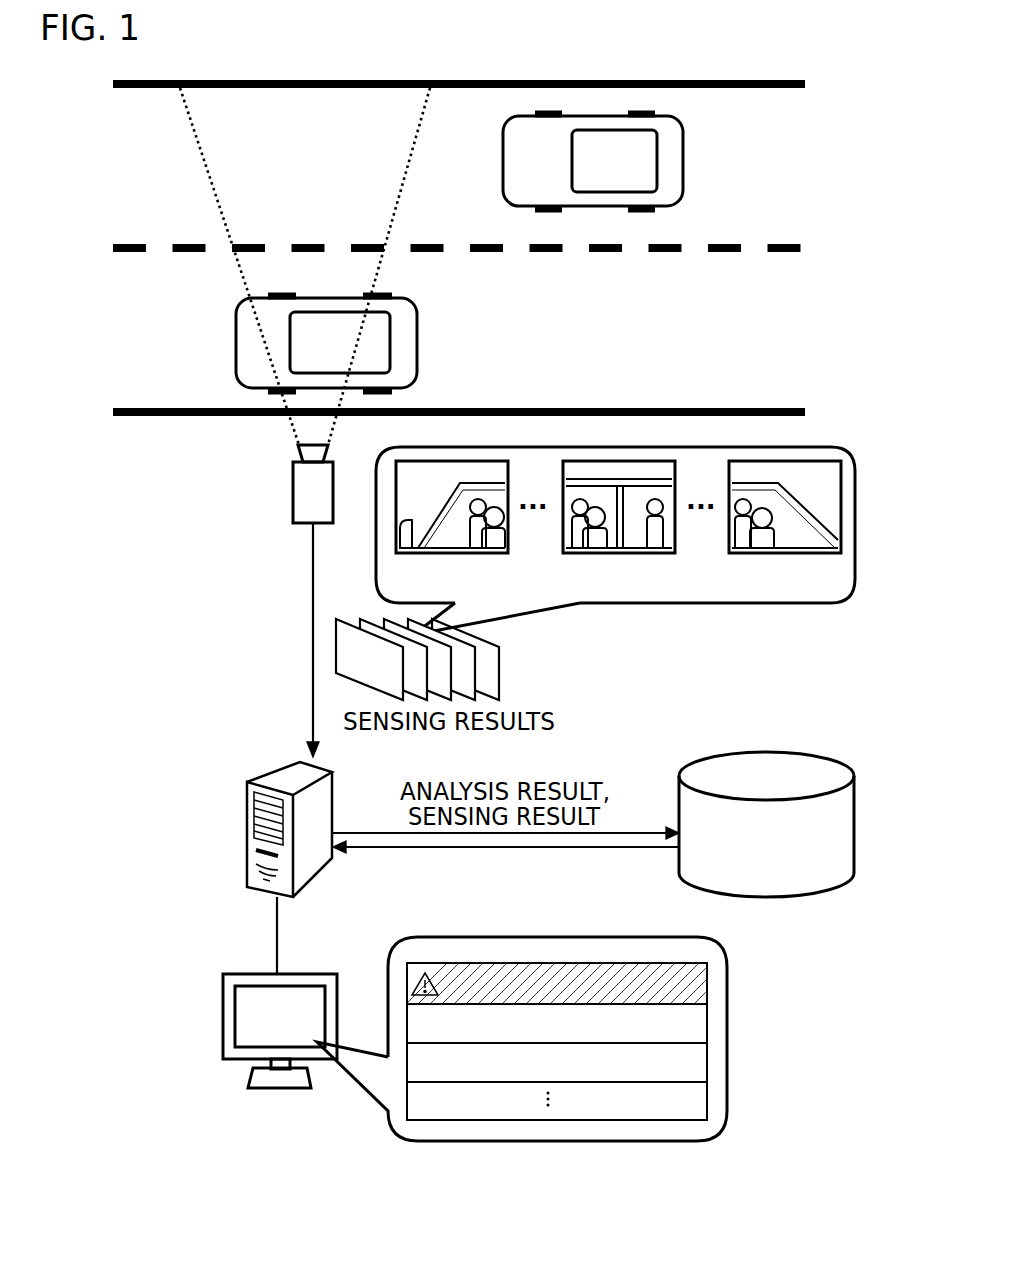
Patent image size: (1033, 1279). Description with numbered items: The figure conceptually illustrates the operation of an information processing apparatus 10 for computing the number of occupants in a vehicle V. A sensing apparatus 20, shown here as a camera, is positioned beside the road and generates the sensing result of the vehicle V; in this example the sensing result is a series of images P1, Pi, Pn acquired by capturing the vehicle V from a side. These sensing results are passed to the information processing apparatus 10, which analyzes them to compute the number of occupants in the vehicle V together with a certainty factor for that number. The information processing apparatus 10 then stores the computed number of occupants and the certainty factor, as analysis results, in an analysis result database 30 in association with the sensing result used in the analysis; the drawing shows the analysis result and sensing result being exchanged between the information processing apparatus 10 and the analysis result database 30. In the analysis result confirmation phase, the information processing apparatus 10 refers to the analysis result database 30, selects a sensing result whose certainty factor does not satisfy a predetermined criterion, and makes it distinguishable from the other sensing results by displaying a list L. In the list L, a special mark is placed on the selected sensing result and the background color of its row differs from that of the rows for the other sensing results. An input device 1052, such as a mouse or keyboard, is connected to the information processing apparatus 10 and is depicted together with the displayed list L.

The vehicle V is at (236, 360).
The sensing apparatus 20 is at (293, 494).
The information processing apparatus 10 is at (247, 843).
The analysis result database 30 is at (765, 752).
The input device 1052 is at (223, 1019).
The list L is at (727, 1049).
The image P1 is at (452, 529).
The image Pi is at (619, 529).
The image Pn is at (785, 529).